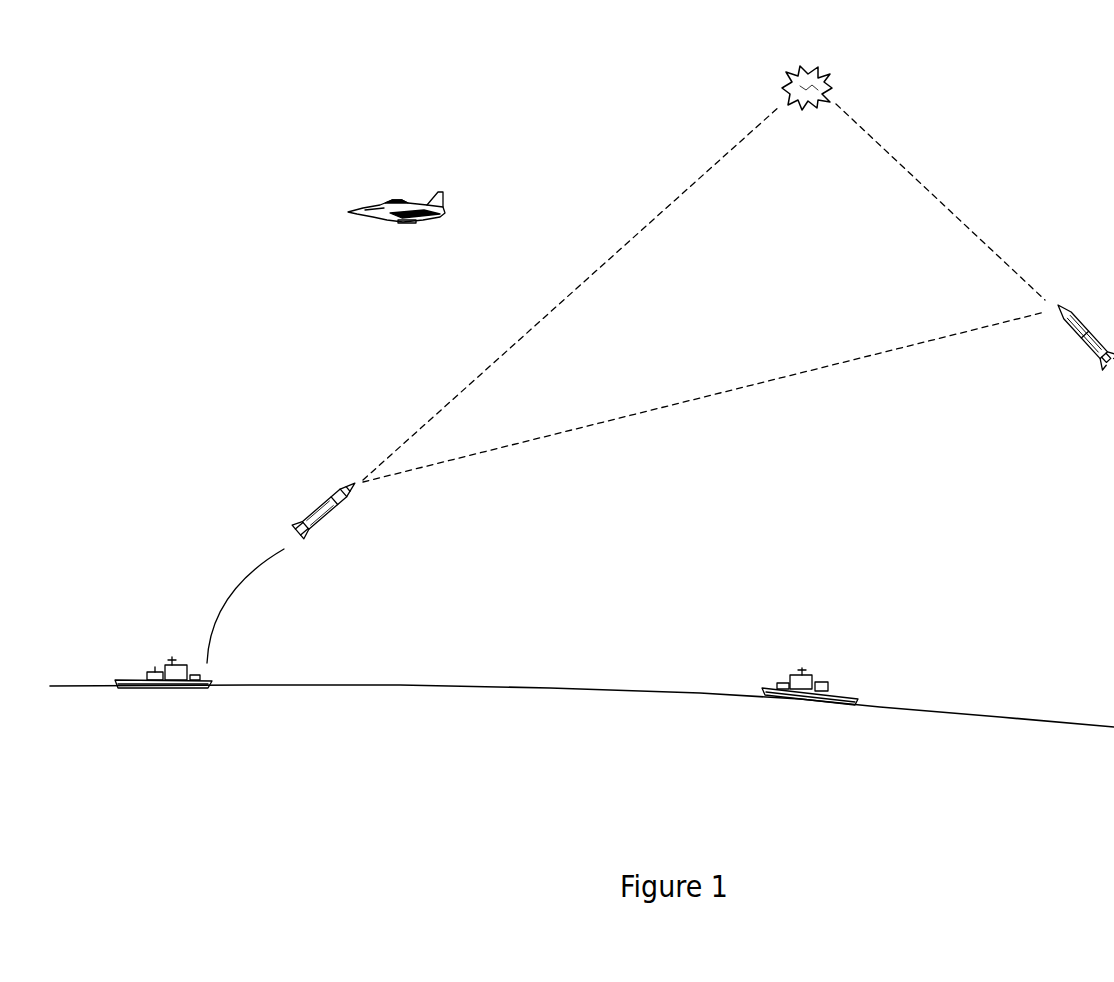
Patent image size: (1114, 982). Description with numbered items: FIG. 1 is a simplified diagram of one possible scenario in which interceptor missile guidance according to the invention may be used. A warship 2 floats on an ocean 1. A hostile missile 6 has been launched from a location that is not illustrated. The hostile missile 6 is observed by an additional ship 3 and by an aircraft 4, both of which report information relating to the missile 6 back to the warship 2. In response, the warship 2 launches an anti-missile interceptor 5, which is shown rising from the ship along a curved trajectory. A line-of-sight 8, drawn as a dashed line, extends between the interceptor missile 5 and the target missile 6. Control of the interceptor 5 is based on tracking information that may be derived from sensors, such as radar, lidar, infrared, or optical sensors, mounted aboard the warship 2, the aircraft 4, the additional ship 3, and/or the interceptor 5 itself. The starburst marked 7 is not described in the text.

The ocean 1 is at (582, 742).
The warship 2 is at (163, 648).
The ship 3 is at (809, 669).
The aircraft 4 is at (396, 191).
The anti-missile interceptor 5 is at (284, 569).
The hostile missile 6 is at (1082, 334).
The intercept point 7 is at (817, 72).
The line-of-sight 8 is at (704, 397).